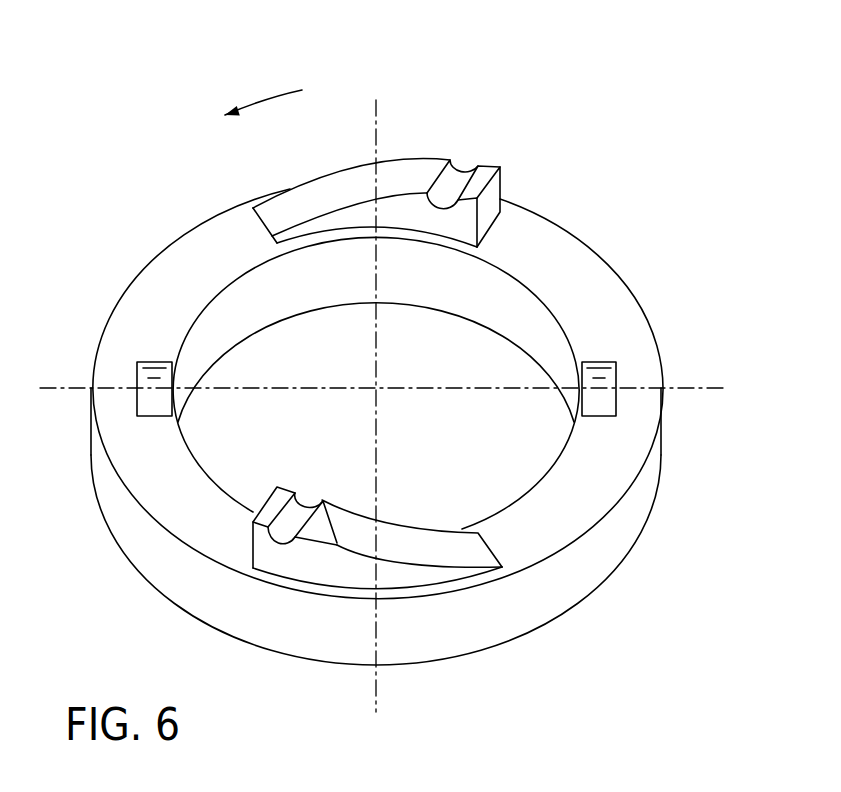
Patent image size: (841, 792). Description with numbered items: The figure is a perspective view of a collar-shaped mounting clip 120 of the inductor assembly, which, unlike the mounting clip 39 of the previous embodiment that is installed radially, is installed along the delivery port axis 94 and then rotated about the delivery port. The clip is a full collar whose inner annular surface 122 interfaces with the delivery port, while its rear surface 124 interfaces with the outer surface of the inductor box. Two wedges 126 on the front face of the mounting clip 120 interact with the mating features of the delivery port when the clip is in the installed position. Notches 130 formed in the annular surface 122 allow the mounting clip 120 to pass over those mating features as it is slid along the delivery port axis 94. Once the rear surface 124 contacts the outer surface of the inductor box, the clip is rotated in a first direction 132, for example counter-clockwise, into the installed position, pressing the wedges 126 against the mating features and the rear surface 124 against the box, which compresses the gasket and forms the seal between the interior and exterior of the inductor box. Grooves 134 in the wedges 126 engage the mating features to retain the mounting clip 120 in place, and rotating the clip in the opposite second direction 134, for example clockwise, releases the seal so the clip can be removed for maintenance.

The mounting clip 39 is at (395, 453).
The mounting clip 120 is at (395, 453).
The delivery port axis 94 is at (388, 384).
The annular surface 122 is at (490, 298).
The rear surface 124 is at (453, 668).
The wedges 126 is at (297, 198).
The notches 130 is at (142, 362).
The first direction 132 is at (270, 93).
The grooves 134 is at (462, 172).